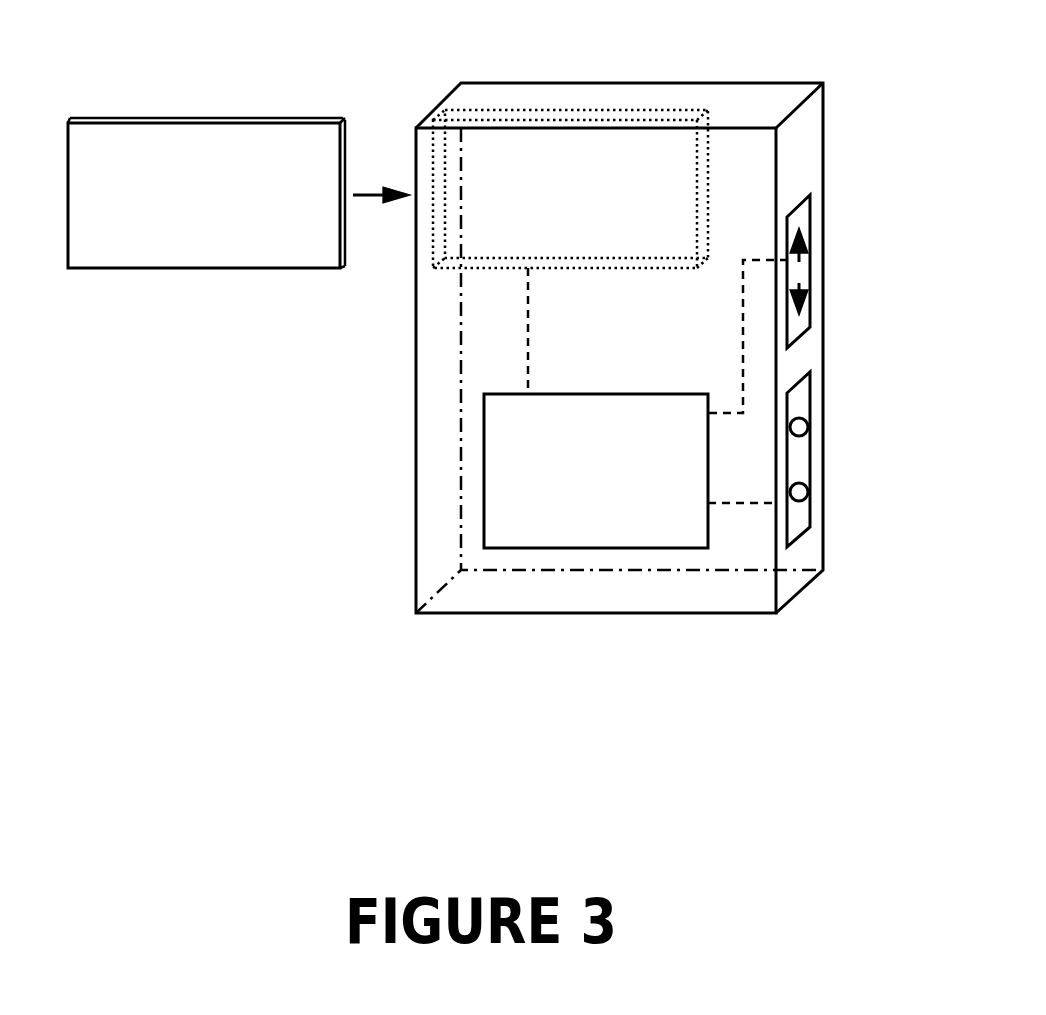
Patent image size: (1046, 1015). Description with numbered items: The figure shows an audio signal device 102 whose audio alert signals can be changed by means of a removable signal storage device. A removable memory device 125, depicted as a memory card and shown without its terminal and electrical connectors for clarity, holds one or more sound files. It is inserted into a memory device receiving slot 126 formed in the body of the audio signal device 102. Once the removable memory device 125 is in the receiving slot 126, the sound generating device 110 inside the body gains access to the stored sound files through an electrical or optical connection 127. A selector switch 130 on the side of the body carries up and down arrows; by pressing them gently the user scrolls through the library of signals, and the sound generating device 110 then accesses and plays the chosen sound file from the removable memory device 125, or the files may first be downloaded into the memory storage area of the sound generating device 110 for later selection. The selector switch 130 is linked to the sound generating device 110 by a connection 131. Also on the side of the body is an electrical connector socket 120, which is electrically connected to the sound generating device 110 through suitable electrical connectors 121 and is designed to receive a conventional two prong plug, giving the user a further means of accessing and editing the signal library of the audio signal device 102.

The audio signal device 102 is at (507, 613).
The removable memory device 125 is at (270, 117).
The memory device receiving slot 126 is at (512, 110).
The electrical or optical connection 127 is at (528, 378).
The sound generating device 110 is at (528, 548).
The selector switch 130 is at (813, 272).
The connection between volume control and sound generating device 131 is at (743, 372).
The electrical connector socket 120 is at (810, 483).
The electrical connectors 121 is at (765, 507).